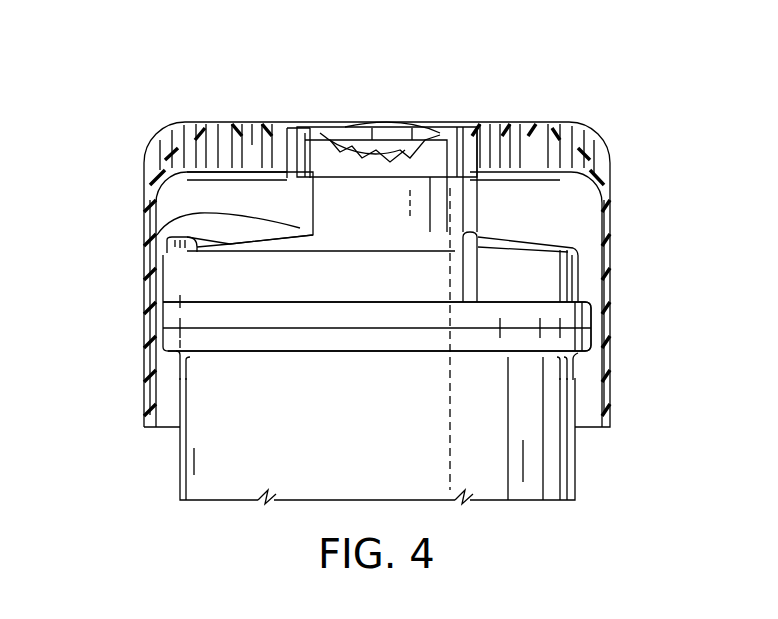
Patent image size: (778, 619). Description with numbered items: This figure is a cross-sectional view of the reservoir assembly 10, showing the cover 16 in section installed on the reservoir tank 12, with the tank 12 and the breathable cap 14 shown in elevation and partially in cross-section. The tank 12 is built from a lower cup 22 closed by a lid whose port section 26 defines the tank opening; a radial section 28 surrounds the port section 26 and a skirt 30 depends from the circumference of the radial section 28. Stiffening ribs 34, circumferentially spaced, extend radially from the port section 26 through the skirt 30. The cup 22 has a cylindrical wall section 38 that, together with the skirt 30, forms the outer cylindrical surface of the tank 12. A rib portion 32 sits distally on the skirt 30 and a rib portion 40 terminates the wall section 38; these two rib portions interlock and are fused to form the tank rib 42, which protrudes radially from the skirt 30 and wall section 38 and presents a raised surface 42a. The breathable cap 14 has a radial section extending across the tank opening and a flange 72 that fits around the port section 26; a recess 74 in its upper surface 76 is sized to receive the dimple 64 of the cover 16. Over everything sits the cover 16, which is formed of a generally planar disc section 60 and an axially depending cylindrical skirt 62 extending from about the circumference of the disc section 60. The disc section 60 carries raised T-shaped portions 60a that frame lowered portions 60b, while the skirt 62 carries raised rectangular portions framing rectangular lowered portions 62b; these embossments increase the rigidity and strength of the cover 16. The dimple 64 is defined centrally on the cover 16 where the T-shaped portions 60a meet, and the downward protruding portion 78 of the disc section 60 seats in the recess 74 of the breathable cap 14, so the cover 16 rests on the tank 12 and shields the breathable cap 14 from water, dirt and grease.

The reservoir assembly 10 is at (652, 126).
The reservoir tank 12 is at (586, 470).
The breathable cap 14 is at (403, 178).
The cover 16 is at (624, 222).
The cup 22 is at (198, 470).
The port section 26 is at (318, 200).
The radial section 28 is at (200, 214).
The skirt 30 is at (580, 265).
The rib portion 32 is at (182, 313).
The stiffening ribs 34 is at (180, 237).
The cylindrical wall section 38 is at (523, 482).
The rib portion 40 is at (182, 340).
The tank rib 42 is at (592, 318).
The raised surface 42a is at (593, 340).
The disc section 60 is at (274, 120).
The T-shaped portions 60a is at (252, 121).
The lowered portions 60b is at (234, 120).
The skirt 62 is at (612, 274).
The lowered portions 62b is at (143, 281).
The dimple 64 is at (390, 121).
The flange 72 is at (488, 121).
The recess 74 is at (407, 121).
The upper surface 76 is at (333, 121).
The portion 78 is at (377, 121).